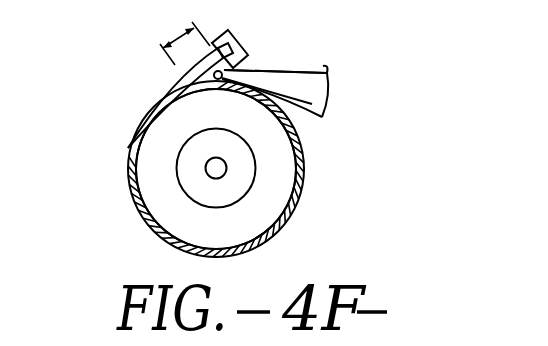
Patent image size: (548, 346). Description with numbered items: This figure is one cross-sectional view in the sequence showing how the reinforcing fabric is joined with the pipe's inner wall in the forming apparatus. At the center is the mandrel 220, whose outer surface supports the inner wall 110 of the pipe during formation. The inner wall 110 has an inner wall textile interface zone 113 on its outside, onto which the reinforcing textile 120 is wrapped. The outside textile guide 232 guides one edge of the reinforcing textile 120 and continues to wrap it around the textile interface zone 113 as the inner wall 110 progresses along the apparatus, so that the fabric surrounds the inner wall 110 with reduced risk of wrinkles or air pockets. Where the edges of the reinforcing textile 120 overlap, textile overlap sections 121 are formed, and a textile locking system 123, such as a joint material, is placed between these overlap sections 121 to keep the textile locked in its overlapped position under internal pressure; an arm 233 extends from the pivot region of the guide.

The inner wall 110 is at (156, 199).
The inner wall textile interface zone 113 is at (129, 172).
The reinforcing textile 120 is at (156, 110).
The textile overlap sections 121 is at (176, 38).
The textile locking system 123 is at (258, 72).
The mandrel 220 is at (233, 188).
The outside textile guide 232 is at (220, 33).
The arm 233 is at (313, 104).